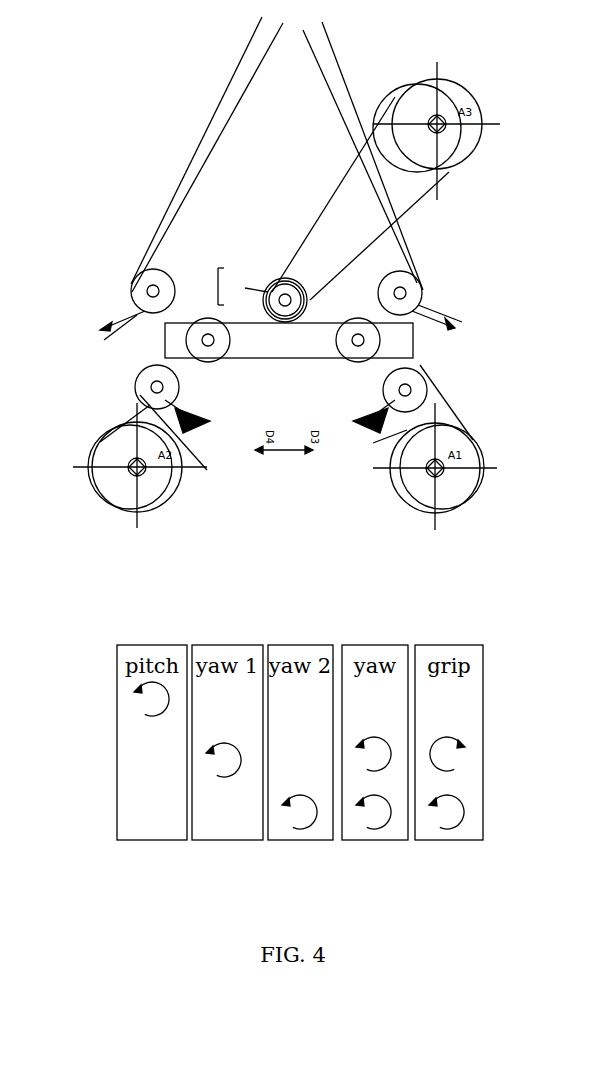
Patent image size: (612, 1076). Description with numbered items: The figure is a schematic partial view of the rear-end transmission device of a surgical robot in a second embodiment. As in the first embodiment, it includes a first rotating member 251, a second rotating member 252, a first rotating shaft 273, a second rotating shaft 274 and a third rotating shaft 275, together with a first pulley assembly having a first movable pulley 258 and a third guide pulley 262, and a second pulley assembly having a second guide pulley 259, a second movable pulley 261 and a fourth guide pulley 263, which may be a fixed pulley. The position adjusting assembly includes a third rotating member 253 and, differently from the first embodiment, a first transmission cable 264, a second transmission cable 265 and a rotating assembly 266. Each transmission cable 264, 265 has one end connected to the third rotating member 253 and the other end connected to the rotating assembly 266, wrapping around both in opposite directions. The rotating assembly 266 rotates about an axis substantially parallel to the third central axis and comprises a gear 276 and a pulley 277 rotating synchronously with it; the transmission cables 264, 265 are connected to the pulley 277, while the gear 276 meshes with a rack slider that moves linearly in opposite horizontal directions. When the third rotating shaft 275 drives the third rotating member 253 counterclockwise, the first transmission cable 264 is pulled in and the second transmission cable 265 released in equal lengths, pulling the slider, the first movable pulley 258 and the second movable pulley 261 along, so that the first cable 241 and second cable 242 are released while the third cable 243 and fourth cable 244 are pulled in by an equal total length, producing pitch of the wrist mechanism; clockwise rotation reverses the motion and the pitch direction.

The first cable 241 is at (337, 100).
The second cable 242 is at (345, 80).
The third cable 243 is at (213, 110).
The fourth cable 244 is at (213, 150).
The first rotating member 251 is at (418, 512).
The second rotating member 252 is at (133, 512).
The third rotating member 253 is at (127, 532).
The first movable pulley 258 is at (155, 368).
The second guide pulley 259 is at (423, 370).
The second movable pulley 261 is at (228, 360).
The third guide pulley 262 is at (378, 293).
The fourth guide pulley 263 is at (167, 272).
The first transmission cable 264 is at (432, 198).
The second transmission cable 265 is at (323, 217).
The rotating assembly 266 is at (218, 287).
The first rotating shaft 273 is at (407, 495).
The second rotating shaft 274 is at (110, 492).
The third rotating shaft 275 is at (417, 134).
The gear 276 is at (264, 300).
The pulley 277 is at (243, 286).